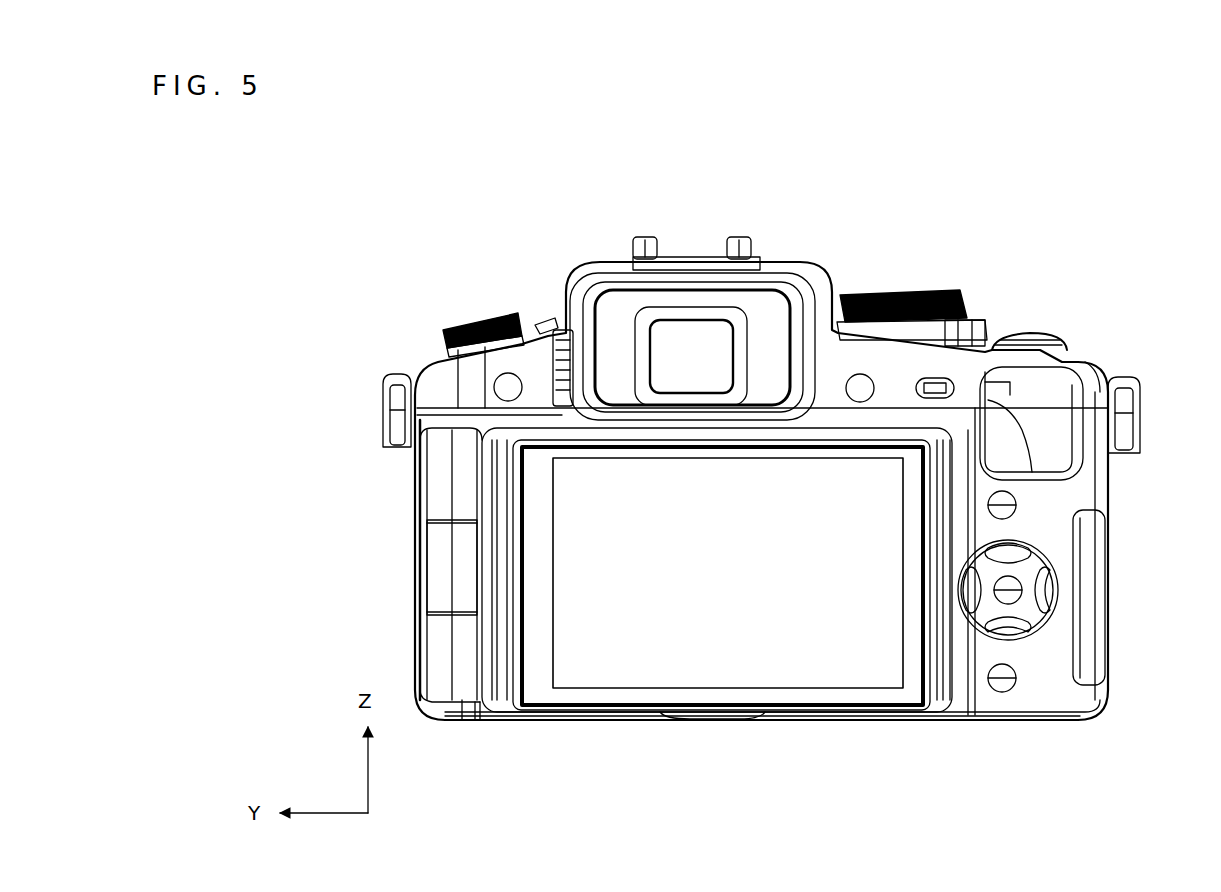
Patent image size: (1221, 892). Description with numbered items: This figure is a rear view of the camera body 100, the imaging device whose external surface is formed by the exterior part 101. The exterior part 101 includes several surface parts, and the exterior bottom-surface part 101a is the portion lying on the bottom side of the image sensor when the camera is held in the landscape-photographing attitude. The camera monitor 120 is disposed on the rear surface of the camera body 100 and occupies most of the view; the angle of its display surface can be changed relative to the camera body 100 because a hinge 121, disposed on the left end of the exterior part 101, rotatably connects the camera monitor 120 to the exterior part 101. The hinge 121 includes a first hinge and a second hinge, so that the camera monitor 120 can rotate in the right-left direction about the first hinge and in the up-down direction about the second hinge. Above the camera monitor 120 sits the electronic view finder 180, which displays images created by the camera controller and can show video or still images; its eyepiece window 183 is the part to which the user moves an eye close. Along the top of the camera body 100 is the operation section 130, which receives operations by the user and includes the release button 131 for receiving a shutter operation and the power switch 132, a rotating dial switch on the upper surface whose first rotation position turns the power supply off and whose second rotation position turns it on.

The camera body 100 is at (540, 272).
The exterior part 101 is at (1042, 690).
The exterior bottom-surface part 101a is at (568, 722).
The camera monitor 120 is at (730, 665).
The hinge 121 is at (425, 553).
The operation section 130 is at (1152, 258).
The release button 131 is at (1042, 336).
The power switch 132 is at (985, 326).
The electronic view finder 180 is at (770, 330).
The eyepiece window 183 is at (697, 320).